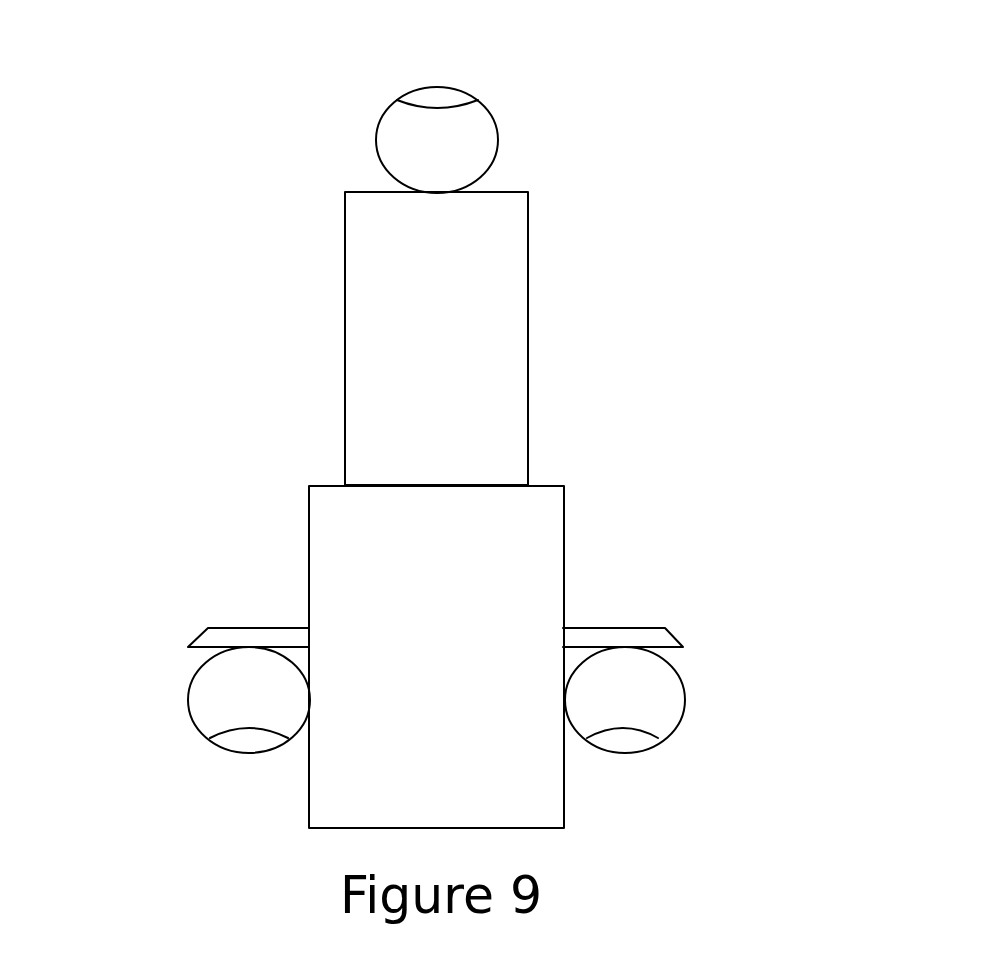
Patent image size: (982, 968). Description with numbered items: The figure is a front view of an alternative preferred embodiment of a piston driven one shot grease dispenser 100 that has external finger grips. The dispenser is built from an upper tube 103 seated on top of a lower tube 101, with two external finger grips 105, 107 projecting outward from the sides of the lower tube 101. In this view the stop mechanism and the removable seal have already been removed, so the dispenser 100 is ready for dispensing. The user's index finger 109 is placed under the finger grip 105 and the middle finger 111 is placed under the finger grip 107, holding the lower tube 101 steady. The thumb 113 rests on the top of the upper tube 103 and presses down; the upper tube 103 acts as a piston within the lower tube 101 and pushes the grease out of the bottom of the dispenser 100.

The piston driven one shot grease dispenser 100 is at (618, 330).
The lower tube 101 is at (548, 583).
The upper tube 103 is at (453, 308).
The external finger grip 105 is at (642, 637).
The external finger grip 107 is at (233, 637).
The index finger 109 is at (650, 720).
The middle finger 111 is at (223, 722).
The thumb 113 is at (470, 127).